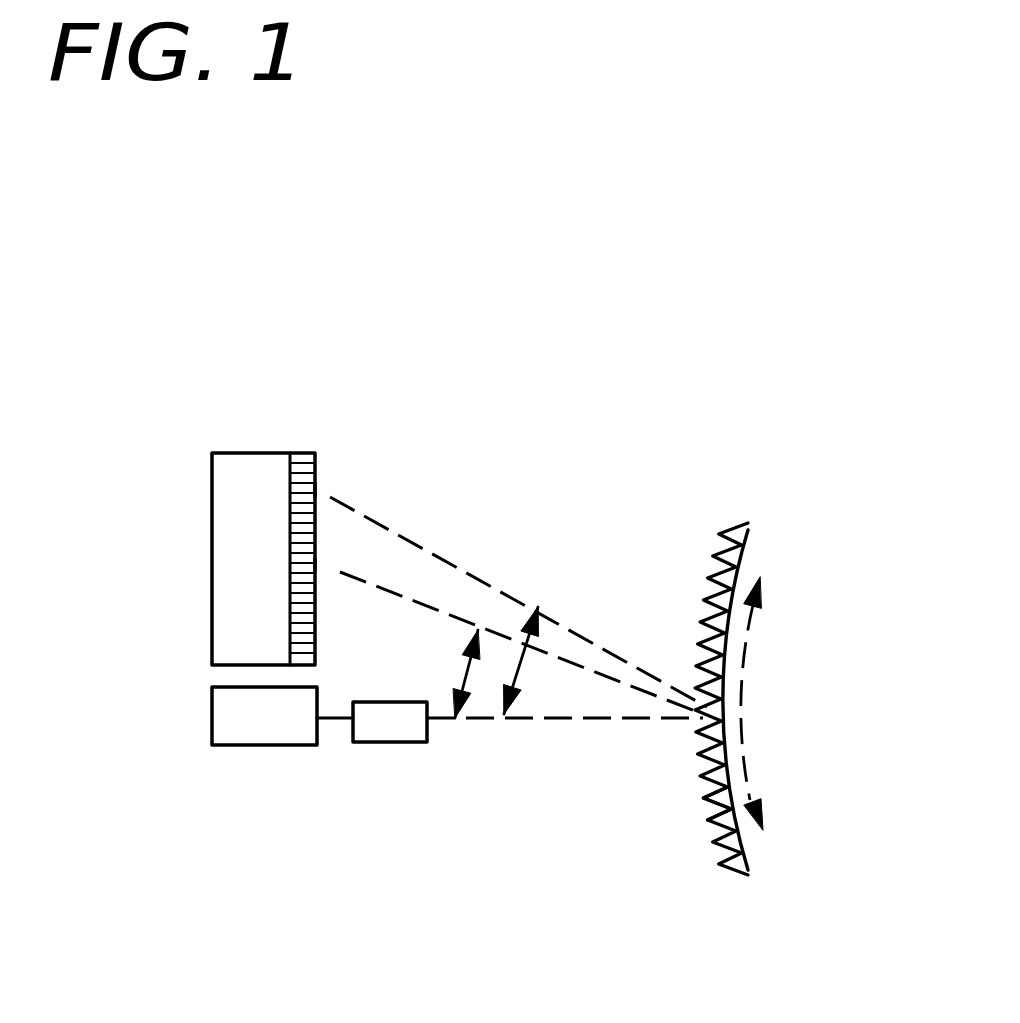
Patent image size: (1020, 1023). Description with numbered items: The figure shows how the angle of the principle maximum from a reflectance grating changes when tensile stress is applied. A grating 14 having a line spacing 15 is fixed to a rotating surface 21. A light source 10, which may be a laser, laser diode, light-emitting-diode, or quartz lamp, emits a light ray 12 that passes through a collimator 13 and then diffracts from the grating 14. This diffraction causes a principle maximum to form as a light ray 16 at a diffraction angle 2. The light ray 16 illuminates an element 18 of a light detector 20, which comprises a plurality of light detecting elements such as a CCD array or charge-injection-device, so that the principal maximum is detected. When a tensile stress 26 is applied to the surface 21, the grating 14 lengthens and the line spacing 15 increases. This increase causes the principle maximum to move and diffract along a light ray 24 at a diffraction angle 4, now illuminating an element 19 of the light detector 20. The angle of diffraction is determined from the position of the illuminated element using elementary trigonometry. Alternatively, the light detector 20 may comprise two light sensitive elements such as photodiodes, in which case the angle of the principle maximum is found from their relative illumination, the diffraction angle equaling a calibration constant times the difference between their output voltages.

The diffraction angle 2 is at (523, 667).
The diffraction angle 4 is at (468, 676).
The light source 10 is at (288, 733).
The light ray 12 is at (333, 718).
The collimator 13 is at (383, 727).
The grating 14 is at (725, 850).
The line spacing 15 is at (712, 813).
The light ray 16 is at (477, 575).
The element 18 is at (318, 489).
The element 19 is at (316, 565).
The light detector 20 is at (274, 587).
The rotating surface 21 is at (745, 845).
The light ray 24 is at (407, 598).
The tensile stress 26 is at (740, 693).